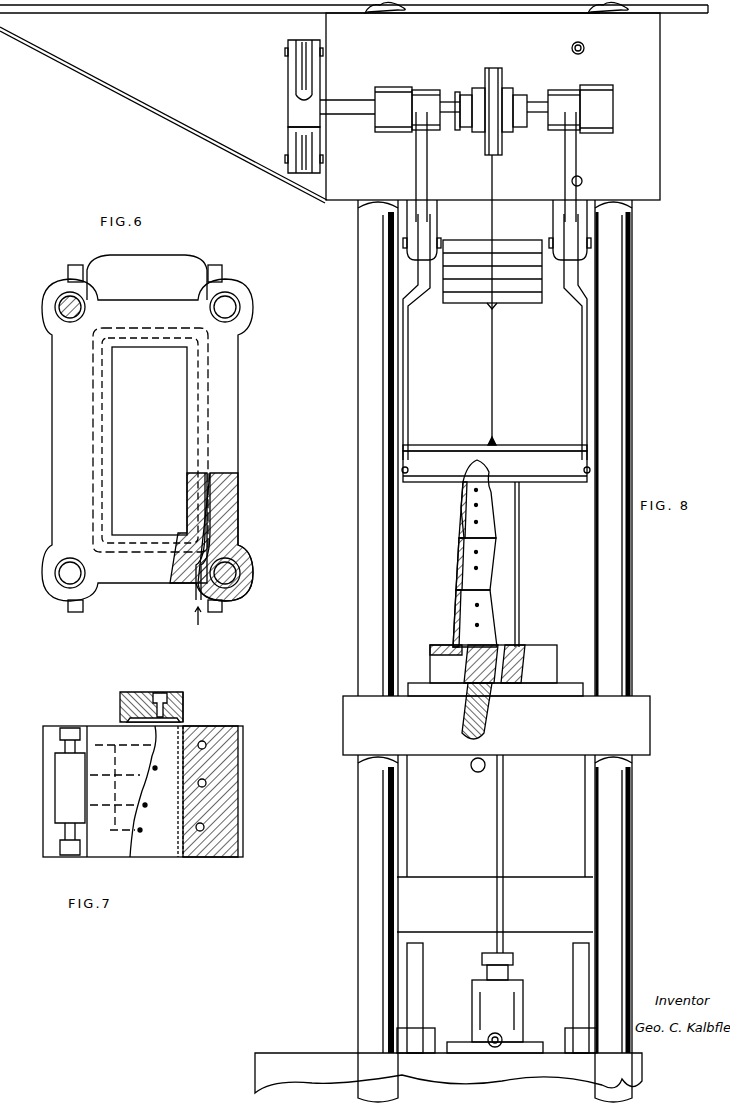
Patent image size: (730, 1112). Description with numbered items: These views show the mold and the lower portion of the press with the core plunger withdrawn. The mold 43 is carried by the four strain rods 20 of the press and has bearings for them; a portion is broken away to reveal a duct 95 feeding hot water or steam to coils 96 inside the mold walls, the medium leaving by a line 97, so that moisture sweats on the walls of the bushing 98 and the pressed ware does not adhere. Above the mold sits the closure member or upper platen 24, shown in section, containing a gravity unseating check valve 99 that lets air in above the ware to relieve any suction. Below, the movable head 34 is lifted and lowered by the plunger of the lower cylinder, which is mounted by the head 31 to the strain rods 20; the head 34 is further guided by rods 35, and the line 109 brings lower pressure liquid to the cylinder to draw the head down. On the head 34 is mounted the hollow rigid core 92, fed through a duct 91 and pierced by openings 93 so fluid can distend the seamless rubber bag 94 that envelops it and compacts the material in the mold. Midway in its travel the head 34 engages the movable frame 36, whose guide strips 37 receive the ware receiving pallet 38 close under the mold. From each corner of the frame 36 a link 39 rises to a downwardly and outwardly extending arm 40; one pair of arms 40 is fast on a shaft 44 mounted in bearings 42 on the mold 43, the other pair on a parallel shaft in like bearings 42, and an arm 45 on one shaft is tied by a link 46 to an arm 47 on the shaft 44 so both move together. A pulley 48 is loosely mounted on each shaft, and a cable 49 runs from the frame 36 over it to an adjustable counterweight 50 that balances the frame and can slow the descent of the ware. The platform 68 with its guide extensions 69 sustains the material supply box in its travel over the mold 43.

In FIG. 8, the strain rods 20 is at (420, 12).
In FIG. 6, the strain rods 20 is at (74, 300).
In FIG. 7, the mold closure member or upper platen 24 is at (120, 708).
In FIG. 8, the head 31 is at (565, 877).
In FIG. 8, the head 34 is at (637, 757).
In FIG. 8, the guide rods 35 is at (505, 822).
In FIG. 8, the movable frame 36 is at (540, 482).
In FIG. 8, the guides 37 is at (455, 449).
In FIG. 8, the ware receiving pallet 38 is at (425, 444).
In FIG. 8, the link 39 is at (408, 352).
In FIG. 8, the arms 40 is at (416, 173).
In FIG. 8, the bearings 42 is at (390, 87).
In FIG. 6, the bearings 42 is at (78, 262).
In FIG. 8, the mold 43 is at (650, 200).
In FIG. 6, the mold 43 is at (238, 405).
In FIG. 8, the shaft 44 is at (346, 98).
In FIG. 8, the arm 45 is at (292, 148).
In FIG. 8, the link 46 is at (298, 80).
In FIG. 8, the arm 47 is at (288, 64).
In FIG. 8, the pulley 48 is at (500, 78).
In FIG. 8, the cable 49 is at (496, 180).
In FIG. 8, the counterweight 50 is at (509, 305).
In FIG. 8, the platform 68 is at (155, 13).
In FIG. 8, the guide extensions 69 is at (520, 13).
In FIG. 8, the duct 91 is at (500, 672).
In FIG. 8, the core 92 is at (460, 616).
In FIG. 8, the openings 93 is at (468, 585).
In FIG. 8, the bag 94 is at (478, 538).
In FIG. 8, the duct 95 is at (578, 54).
In FIG. 6, the duct 95 is at (183, 617).
In FIG. 7, the duct 95 is at (215, 726).
In FIG. 6, the coils 96 is at (104, 484).
In FIG. 7, the coils 96 is at (205, 785).
In FIG. 8, the line 97 is at (582, 181).
In FIG. 6, the line 97 is at (182, 545).
In FIG. 7, the line 97 is at (142, 830).
In FIG. 7, the bushing 98 is at (186, 857).
In FIG. 7, the gravity unseating check valve 99 is at (183, 692).
In FIG. 8, the line 109 is at (502, 1037).